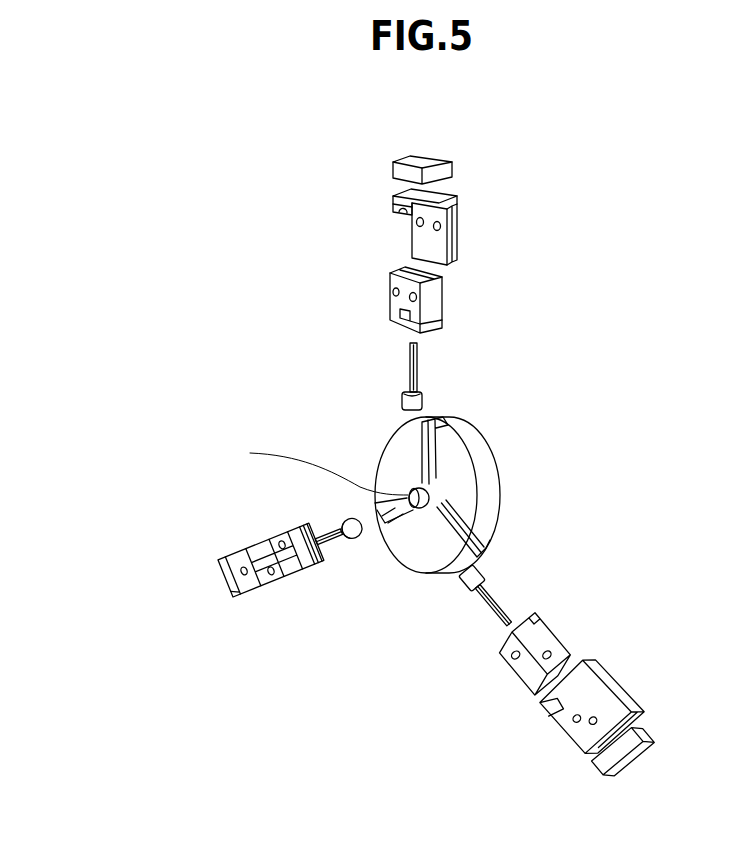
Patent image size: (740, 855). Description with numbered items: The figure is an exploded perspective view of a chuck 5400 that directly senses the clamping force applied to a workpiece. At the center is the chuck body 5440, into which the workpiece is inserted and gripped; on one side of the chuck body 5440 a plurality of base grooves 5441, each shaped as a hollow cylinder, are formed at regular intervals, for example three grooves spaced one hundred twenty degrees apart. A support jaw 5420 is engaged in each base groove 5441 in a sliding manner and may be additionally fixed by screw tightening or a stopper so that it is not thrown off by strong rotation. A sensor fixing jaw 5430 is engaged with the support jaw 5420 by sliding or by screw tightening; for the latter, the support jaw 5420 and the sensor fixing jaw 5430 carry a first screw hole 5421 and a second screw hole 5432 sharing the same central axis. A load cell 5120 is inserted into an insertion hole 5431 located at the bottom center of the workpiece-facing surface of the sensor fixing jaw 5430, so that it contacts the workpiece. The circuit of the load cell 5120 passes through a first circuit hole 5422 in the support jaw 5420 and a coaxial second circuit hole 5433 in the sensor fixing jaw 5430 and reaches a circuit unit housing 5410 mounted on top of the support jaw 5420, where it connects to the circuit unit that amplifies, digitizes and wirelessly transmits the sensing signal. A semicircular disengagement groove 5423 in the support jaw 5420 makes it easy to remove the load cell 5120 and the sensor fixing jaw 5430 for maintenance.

The chuck 5400 is at (133, 278).
The circuit unit housing 5410 is at (393, 170).
The support jaw 5420 is at (392, 205).
The first screw hole 5421 is at (455, 223).
The first circuit hole 5422 is at (455, 195).
The disengagement groove 5423 is at (395, 210).
The sensor fixing jaw 5430 is at (387, 303).
The insertion hole 5431 is at (428, 320).
The second screw hole 5432 is at (428, 293).
The second circuit hole 5433 is at (443, 275).
The load cell 5120 is at (402, 402).
The chuck body 5440 is at (502, 520).
The base groove 5441 is at (432, 440).